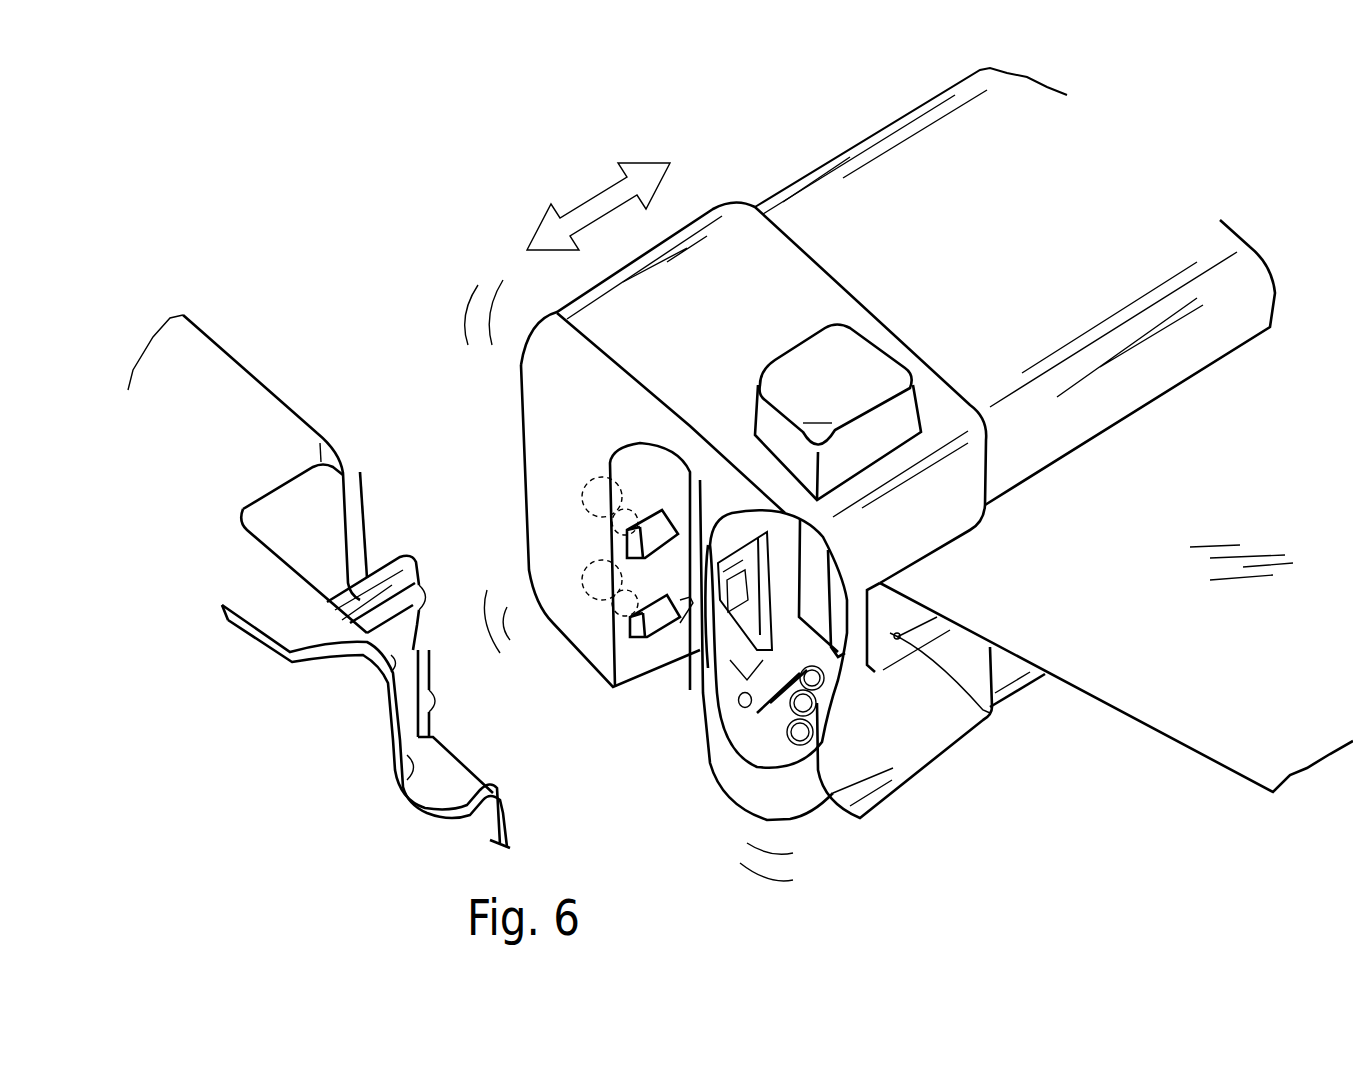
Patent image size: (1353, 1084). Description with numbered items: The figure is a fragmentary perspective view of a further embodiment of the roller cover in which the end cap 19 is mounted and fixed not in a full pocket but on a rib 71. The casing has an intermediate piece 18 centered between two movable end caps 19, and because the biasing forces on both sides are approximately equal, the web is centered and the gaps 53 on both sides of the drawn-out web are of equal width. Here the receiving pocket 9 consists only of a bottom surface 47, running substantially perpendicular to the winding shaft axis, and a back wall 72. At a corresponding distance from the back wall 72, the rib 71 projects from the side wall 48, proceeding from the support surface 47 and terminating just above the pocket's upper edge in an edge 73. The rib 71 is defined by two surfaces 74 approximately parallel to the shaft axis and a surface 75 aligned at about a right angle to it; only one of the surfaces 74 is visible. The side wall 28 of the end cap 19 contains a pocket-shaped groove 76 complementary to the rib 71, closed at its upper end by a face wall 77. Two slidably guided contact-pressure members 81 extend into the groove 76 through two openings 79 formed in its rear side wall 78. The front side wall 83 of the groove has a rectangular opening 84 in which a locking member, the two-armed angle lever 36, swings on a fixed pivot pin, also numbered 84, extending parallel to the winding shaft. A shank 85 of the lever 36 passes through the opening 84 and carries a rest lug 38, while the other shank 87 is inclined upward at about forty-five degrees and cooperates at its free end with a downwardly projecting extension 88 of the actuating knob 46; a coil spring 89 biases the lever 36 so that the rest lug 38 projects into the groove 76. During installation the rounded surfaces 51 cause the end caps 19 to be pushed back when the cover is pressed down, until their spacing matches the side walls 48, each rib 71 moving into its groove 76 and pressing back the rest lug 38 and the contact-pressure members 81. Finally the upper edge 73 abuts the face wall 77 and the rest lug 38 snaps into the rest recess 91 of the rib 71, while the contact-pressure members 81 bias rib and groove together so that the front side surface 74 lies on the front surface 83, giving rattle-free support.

The receiving pocket 9 is at (346, 586).
The intermediate piece 18 is at (1018, 254).
The end cap 19 is at (712, 207).
The side wall 28 is at (540, 392).
The two-armed lever 36 is at (763, 623).
The rest lug 38 is at (808, 587).
The actuating knob 46 is at (867, 373).
The bottom surface 47 is at (457, 783).
The side wall 48 is at (393, 777).
The rounded surfaces 51 is at (423, 647).
The gaps 53 is at (993, 713).
The rib 71 is at (412, 545).
The back wall 72 is at (287, 517).
The edge 73 is at (365, 480).
The surfaces 74 is at (400, 610).
The surface 75 is at (433, 674).
The groove 76 is at (660, 697).
The face wall 77 is at (640, 443).
The rear side wall 78 is at (622, 477).
The openings 79 is at (630, 548).
The contact-pressure members 81 is at (660, 513).
The front side wall 83 is at (695, 740).
The rectangular opening 84 is at (757, 552).
The shank 85 is at (743, 694).
The shank 87 is at (825, 727).
The extension 88 is at (883, 603).
The coil spring 89 is at (833, 683).
The rest recess 91 is at (400, 683).